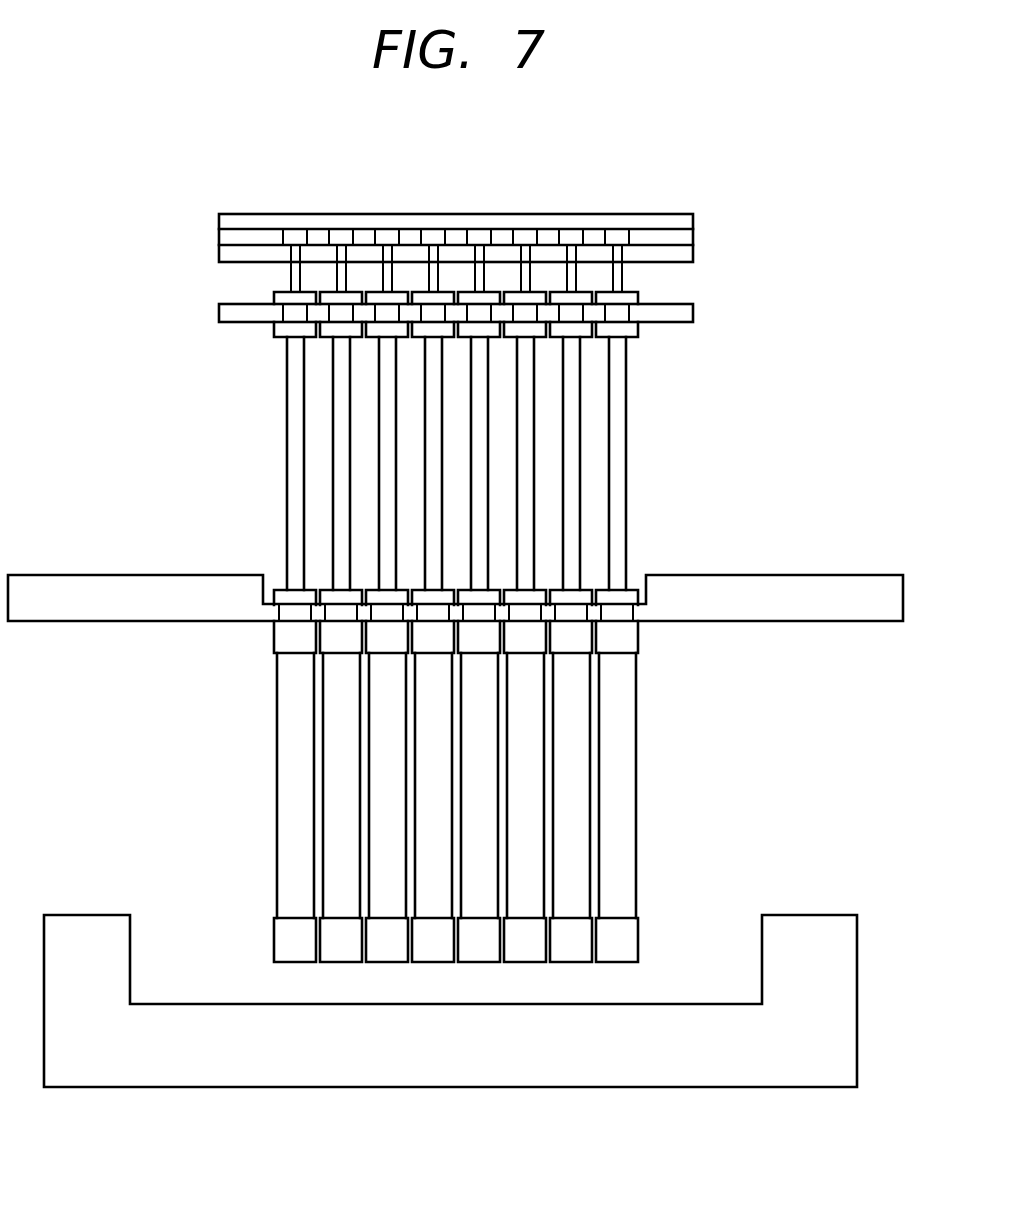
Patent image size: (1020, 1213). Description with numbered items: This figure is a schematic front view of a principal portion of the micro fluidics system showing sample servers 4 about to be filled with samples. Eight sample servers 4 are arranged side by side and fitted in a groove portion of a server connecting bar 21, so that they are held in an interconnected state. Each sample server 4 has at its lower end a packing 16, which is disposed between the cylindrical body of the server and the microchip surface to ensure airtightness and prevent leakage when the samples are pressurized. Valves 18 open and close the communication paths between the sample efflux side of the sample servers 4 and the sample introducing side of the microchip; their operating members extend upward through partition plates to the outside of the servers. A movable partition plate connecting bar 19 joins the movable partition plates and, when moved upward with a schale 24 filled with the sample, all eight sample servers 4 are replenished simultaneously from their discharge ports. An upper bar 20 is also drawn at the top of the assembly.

The upper wiring board 20 is at (663, 214).
The movable partition plate connecting bar 19 is at (232, 322).
The valve 18 is at (626, 437).
The server connecting bar 21 is at (863, 575).
The sample server 4 is at (636, 727).
The packing 16 is at (638, 933).
The schale 24 is at (764, 1088).